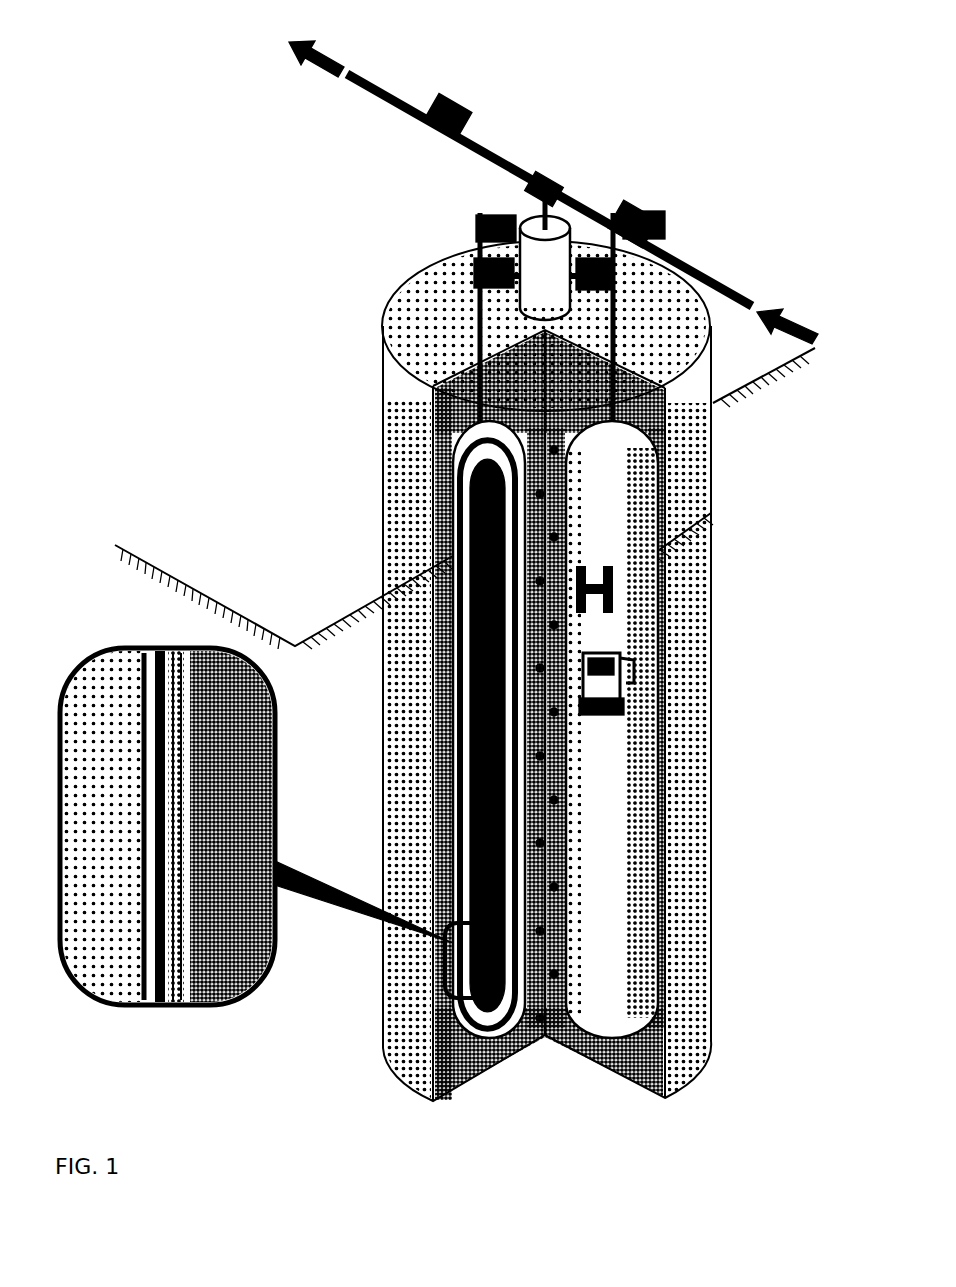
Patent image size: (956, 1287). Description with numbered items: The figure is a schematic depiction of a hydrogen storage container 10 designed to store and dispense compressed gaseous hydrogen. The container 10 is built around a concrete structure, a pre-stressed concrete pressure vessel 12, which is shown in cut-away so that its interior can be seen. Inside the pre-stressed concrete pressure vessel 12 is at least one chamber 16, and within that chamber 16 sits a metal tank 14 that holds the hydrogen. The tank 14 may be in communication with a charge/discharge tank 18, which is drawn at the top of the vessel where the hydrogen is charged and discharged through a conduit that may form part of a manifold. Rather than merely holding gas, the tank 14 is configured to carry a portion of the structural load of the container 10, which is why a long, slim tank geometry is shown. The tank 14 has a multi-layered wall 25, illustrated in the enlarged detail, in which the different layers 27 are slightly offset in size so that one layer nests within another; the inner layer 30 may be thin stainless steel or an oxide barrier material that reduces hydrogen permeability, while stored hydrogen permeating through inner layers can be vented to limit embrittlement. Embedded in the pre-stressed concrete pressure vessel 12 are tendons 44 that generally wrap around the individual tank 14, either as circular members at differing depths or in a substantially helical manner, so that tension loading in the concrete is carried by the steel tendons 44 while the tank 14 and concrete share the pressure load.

The hydrogen storage container 10 is at (386, 247).
The pre-stressed concrete pressure vessel 12 is at (693, 597).
The tank 14 is at (448, 432).
The chamber 16 is at (450, 396).
The charge/discharge tank 18 is at (553, 219).
The multi-layered wall 25 is at (114, 619).
The layers 27 is at (148, 642).
The inner layer 30 is at (188, 662).
The tendons 44 is at (553, 1016).